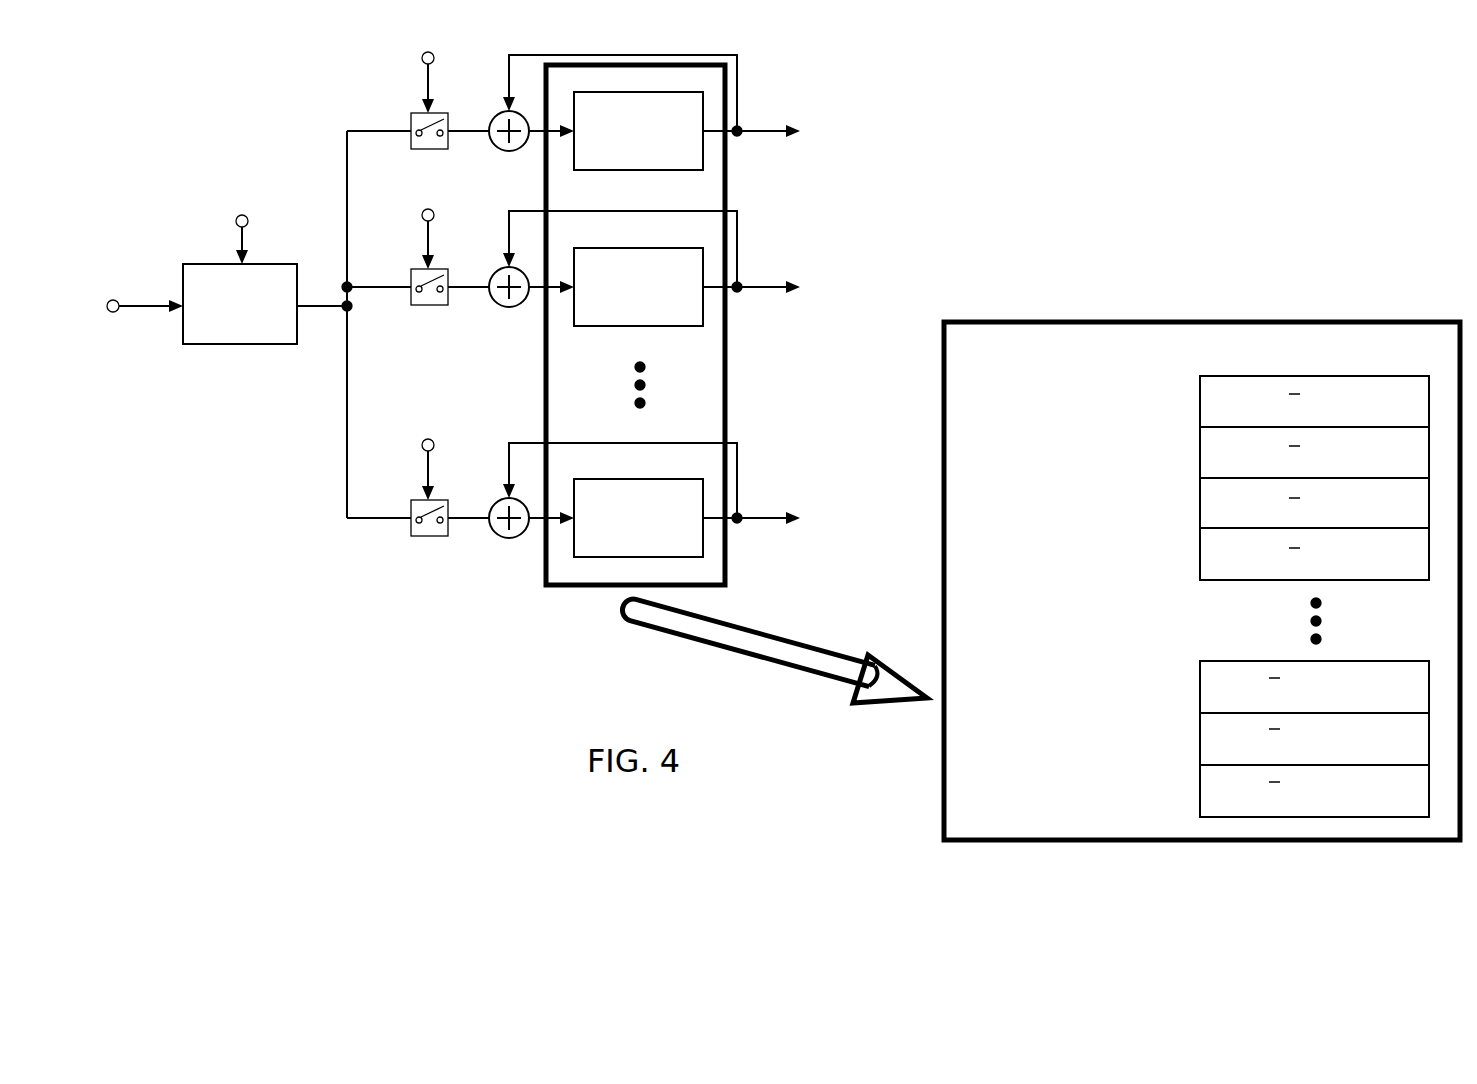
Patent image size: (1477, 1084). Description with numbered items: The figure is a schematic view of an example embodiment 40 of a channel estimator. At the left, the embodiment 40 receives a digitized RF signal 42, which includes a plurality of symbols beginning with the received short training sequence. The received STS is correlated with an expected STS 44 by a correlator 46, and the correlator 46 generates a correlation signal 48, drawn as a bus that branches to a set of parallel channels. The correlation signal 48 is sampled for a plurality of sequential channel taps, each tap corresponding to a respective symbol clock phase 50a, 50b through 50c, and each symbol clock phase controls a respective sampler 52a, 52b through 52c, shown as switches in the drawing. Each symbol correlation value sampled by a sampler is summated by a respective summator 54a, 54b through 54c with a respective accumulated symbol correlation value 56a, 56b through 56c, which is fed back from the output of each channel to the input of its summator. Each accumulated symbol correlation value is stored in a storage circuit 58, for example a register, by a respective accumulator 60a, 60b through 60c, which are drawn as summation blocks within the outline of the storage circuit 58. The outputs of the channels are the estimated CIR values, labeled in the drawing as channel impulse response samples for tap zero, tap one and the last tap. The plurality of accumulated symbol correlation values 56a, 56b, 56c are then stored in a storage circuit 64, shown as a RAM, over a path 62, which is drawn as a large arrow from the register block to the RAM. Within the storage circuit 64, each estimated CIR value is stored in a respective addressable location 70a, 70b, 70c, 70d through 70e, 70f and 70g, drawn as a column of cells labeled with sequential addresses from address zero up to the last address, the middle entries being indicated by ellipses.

The channel estimator embodiment 40 is at (993, 132).
The digitized RF signal 42 is at (108, 297).
The expected STS 44 is at (236, 224).
The correlator 46 is at (292, 286).
The correlation signal 48 is at (347, 195).
The symbol clock phase 50a is at (424, 88).
The symbol clock phase 50b is at (424, 234).
The symbol clock phase 50c is at (424, 464).
The sampler 52a is at (411, 144).
The sampler 52b is at (411, 300).
The sampler 52c is at (411, 531).
The summator 54a is at (508, 151).
The summator 54b is at (508, 307).
The summator 54c is at (508, 538).
The accumulated symbol correlation value 56a is at (766, 128).
The accumulated symbol correlation value 56b is at (766, 284).
The accumulated symbol correlation value 56c is at (766, 515).
The storage circuit 58 is at (720, 90).
The accumulator 60a is at (699, 110).
The accumulator 60b is at (699, 266).
The accumulator 60c is at (697, 498).
The path 62 is at (771, 664).
The storage circuit 64 is at (1452, 350).
The addressable location 70a is at (1424, 397).
The addressable location 70b is at (1424, 449).
The addressable location 70c is at (1424, 501).
The addressable location 70d is at (1424, 551).
The addressable location 70e is at (1426, 684).
The addressable location 70f is at (1422, 735).
The addressable location 70g is at (1426, 786).